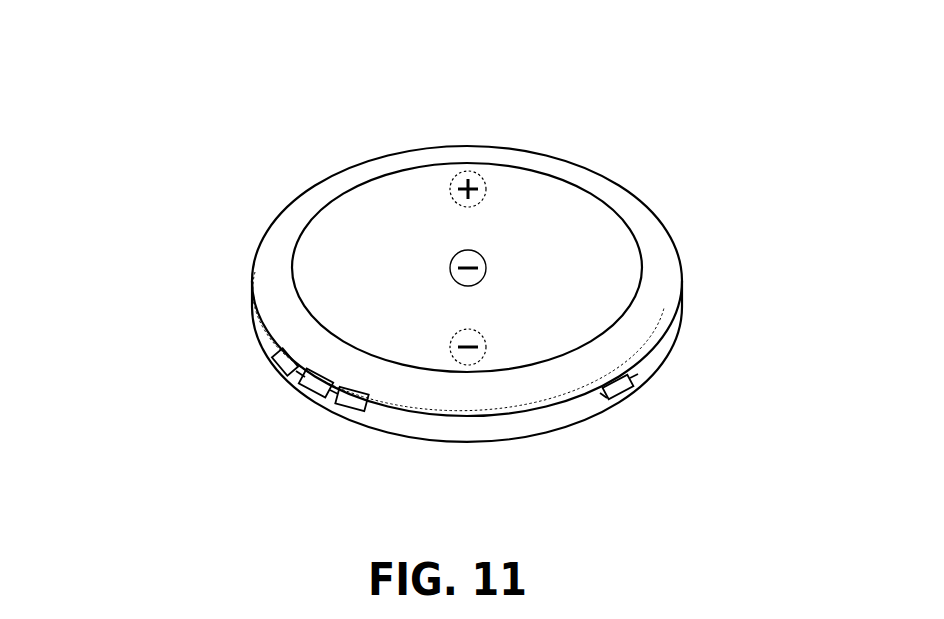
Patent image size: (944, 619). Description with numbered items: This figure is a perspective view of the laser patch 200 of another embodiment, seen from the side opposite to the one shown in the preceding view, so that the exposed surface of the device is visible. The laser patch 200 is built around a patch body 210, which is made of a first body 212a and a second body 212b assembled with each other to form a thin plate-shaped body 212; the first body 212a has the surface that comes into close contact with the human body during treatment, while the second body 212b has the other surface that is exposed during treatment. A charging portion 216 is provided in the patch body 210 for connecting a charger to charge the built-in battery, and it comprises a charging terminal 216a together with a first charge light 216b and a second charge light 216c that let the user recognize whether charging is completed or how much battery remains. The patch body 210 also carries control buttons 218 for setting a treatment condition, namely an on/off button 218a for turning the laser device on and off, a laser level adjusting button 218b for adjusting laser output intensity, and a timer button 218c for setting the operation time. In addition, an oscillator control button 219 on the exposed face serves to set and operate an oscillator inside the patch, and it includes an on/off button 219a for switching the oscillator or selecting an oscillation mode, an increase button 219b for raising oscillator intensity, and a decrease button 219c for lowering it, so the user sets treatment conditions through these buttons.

The laser patch 200 is at (98, 66).
The patch body 210 is at (563, 158).
The body 212 is at (135, 303).
The first body 212a is at (253, 337).
The second body 212b is at (253, 299).
The charging portion 216 is at (780, 474).
The charging terminal 216a is at (622, 392).
The first charge light 216b is at (638, 377).
The second charge light 216c is at (604, 397).
The control buttons 218 is at (135, 387).
The on/off button 218a is at (338, 402).
The laser level adjusting button 218b is at (302, 384).
The timer button 218c is at (274, 358).
The oscillator control button 219 is at (786, 205).
The on/off button 219a is at (486, 265).
The increase button 219b is at (487, 186).
The decrease button 219c is at (487, 346).